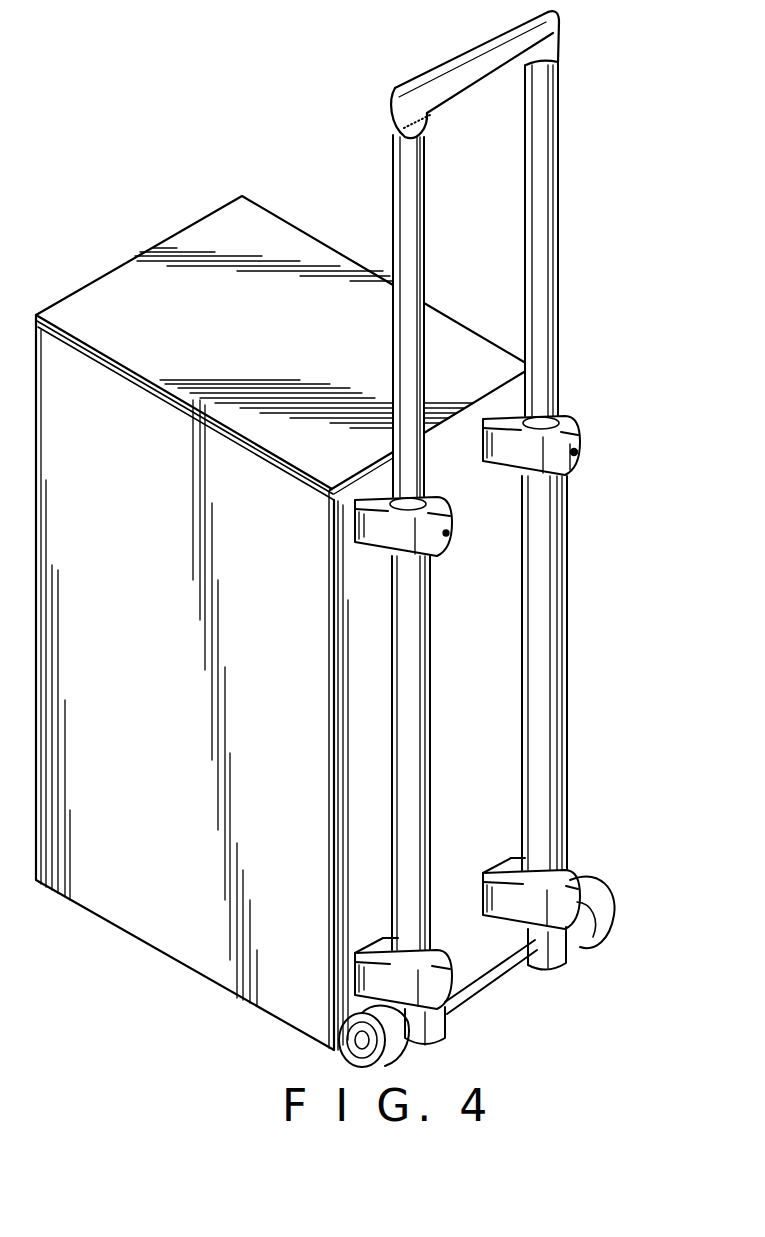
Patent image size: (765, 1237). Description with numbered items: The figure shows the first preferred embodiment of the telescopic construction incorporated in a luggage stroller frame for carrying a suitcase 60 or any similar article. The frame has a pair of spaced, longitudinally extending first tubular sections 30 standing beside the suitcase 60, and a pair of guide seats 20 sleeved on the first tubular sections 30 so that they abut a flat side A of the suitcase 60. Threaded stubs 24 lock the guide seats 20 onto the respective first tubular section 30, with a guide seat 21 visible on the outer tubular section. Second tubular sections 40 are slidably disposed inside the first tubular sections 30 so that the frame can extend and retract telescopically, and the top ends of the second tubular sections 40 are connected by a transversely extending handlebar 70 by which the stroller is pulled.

The flat side A is at (368, 597).
The suitcase 60 is at (328, 262).
The handlebar 70 is at (428, 80).
The second tubular sections 40 is at (532, 200).
The first tubular sections 30 is at (548, 622).
The guide seats 20 is at (578, 410).
The clamping bracket 21 is at (568, 447).
The threaded stubs 24 is at (575, 470).